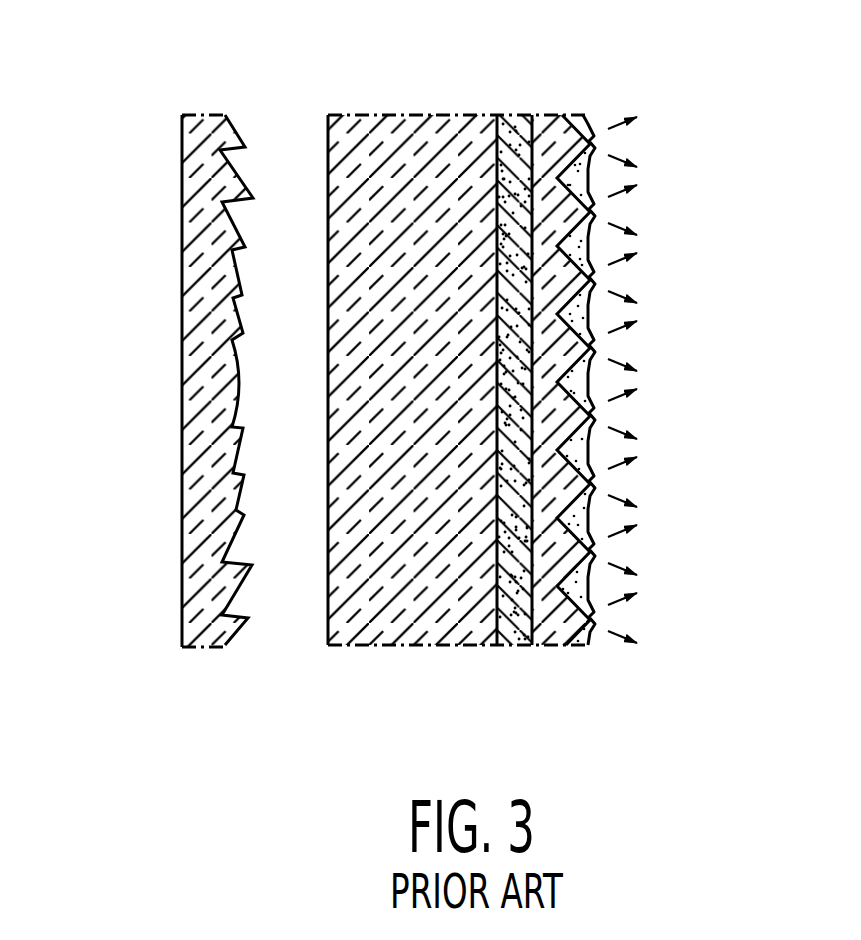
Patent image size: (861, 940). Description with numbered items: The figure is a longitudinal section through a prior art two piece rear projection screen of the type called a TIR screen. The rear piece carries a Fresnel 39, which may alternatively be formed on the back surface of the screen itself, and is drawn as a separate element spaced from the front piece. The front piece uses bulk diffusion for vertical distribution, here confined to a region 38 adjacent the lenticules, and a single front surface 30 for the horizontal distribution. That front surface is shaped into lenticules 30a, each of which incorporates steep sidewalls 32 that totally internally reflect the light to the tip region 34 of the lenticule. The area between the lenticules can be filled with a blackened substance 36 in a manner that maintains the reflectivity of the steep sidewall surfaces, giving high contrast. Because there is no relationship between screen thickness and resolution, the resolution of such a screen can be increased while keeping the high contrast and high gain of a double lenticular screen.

The Fresnel 39 is at (178, 337).
The front surface 30 is at (553, 650).
The region adjacent the lenticules 38 is at (521, 115).
The lenticules 30a is at (541, 115).
The tip region 34 is at (590, 474).
The blackened substance 36 is at (592, 363).
The steep sidewalls 32 is at (588, 570).